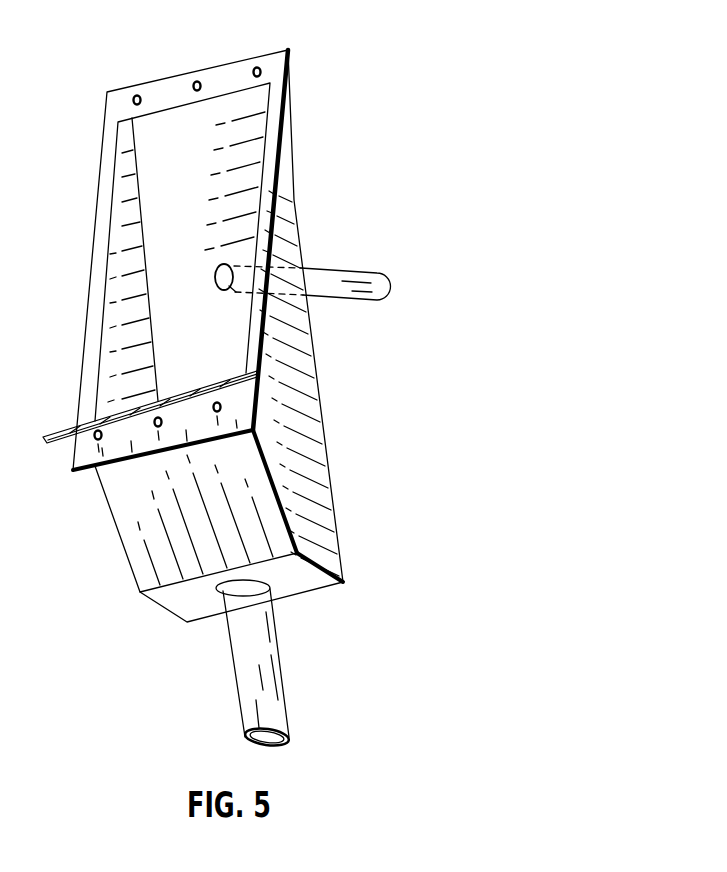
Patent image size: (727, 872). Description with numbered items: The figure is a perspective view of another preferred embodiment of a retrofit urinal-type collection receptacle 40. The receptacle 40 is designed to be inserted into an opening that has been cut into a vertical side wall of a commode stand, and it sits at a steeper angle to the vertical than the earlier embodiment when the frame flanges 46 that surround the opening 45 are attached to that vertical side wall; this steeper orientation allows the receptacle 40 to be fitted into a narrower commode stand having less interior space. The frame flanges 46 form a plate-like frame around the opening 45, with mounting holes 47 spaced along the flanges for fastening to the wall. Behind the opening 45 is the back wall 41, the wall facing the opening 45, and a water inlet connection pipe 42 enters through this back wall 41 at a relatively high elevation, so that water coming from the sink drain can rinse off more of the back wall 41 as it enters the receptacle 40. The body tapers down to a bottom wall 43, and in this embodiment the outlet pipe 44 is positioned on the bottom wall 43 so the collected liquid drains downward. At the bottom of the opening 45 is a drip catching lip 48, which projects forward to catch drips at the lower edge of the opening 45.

The retrofit urinal-type collection receptacle 40 is at (327, 399).
The back wall 41 is at (208, 216).
The water inlet connection pipe 42 is at (340, 277).
The bottom wall 43 is at (188, 607).
The outlet pipe 44 is at (261, 656).
The opening 45 is at (165, 236).
The frame flanges 46 is at (147, 97).
The mounting hole 47 is at (197, 81).
The drip catching lip 48 is at (67, 427).